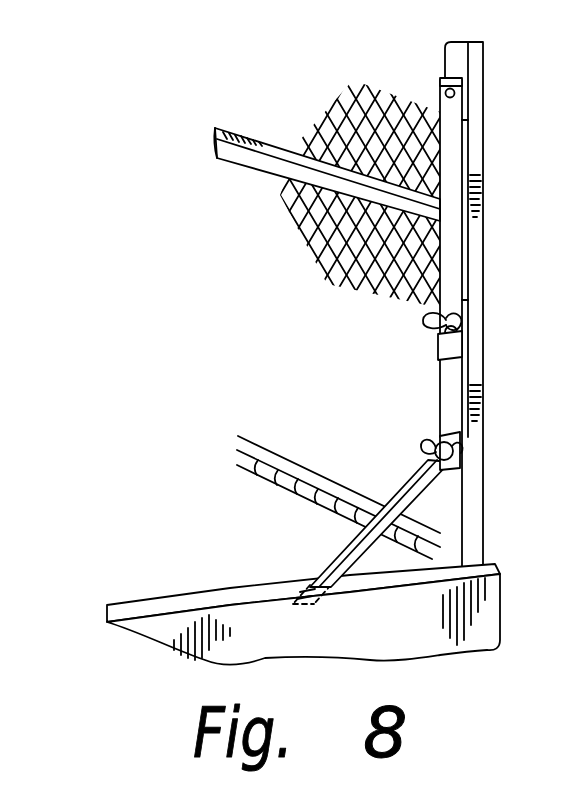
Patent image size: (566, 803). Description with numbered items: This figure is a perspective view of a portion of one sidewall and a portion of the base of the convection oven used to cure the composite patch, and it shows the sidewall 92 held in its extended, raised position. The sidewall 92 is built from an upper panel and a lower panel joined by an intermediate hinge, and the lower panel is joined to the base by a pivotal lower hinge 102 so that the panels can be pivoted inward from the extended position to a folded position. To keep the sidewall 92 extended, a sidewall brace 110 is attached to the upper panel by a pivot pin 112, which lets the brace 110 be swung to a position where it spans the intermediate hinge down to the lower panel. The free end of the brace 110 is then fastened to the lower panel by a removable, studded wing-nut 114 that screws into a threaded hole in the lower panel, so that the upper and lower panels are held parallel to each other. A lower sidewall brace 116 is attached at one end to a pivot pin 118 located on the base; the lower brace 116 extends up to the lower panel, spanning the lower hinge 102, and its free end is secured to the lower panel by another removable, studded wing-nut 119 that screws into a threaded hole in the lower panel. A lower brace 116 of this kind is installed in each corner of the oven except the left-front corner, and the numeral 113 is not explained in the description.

The sidewall 92 is at (343, 249).
The lower hinge 102 is at (440, 551).
The sidewall brace 110 is at (455, 145).
The pivot pin 112 is at (454, 92).
The slot 113 is at (455, 302).
The studded wing-nut 114 is at (462, 340).
The lower sidewall brace 116 is at (428, 497).
The pivot pin 118 is at (325, 600).
The studded wing-nut 119 is at (460, 462).